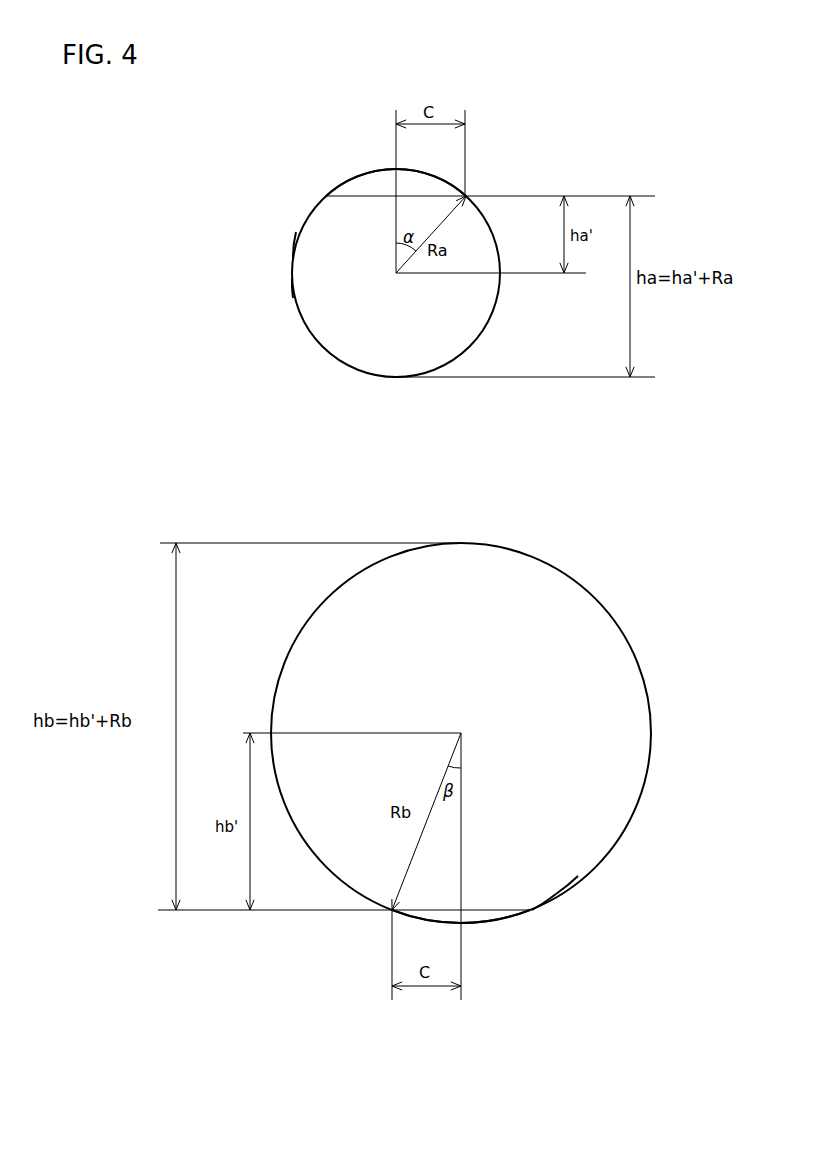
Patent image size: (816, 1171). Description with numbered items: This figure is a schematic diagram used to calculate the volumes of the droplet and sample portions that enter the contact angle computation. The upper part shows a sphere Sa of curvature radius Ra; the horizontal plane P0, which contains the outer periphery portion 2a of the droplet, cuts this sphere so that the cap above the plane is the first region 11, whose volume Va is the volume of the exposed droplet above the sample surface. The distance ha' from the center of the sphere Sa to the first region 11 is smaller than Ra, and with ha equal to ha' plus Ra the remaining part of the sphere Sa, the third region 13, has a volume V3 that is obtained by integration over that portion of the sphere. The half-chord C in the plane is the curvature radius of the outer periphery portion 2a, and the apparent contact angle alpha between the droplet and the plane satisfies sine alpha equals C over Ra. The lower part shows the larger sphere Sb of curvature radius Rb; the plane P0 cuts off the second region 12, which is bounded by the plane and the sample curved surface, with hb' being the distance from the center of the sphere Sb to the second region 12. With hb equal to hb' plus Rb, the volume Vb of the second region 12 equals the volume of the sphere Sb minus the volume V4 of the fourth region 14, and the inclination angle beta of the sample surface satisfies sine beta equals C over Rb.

The sphere Sa is at (497, 173).
The sphere Sb is at (616, 593).
The outer periphery portion 2a is at (328, 195).
The first region 11 is at (377, 188).
The second region 12 is at (480, 917).
The third region 13 is at (316, 246).
The fourth region 14 is at (535, 887).
The volume of third region V3 is at (306, 288).
The volume of fourth region V4 is at (564, 884).
The volume of first region Va is at (392, 180).